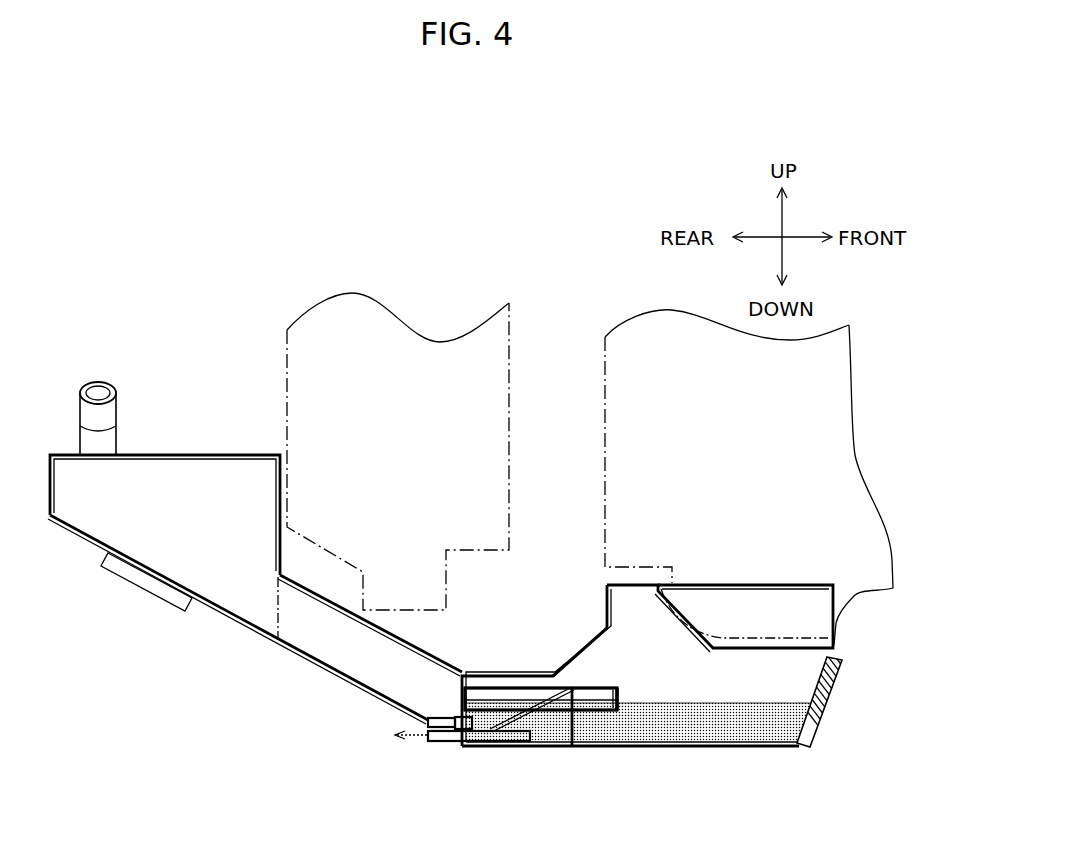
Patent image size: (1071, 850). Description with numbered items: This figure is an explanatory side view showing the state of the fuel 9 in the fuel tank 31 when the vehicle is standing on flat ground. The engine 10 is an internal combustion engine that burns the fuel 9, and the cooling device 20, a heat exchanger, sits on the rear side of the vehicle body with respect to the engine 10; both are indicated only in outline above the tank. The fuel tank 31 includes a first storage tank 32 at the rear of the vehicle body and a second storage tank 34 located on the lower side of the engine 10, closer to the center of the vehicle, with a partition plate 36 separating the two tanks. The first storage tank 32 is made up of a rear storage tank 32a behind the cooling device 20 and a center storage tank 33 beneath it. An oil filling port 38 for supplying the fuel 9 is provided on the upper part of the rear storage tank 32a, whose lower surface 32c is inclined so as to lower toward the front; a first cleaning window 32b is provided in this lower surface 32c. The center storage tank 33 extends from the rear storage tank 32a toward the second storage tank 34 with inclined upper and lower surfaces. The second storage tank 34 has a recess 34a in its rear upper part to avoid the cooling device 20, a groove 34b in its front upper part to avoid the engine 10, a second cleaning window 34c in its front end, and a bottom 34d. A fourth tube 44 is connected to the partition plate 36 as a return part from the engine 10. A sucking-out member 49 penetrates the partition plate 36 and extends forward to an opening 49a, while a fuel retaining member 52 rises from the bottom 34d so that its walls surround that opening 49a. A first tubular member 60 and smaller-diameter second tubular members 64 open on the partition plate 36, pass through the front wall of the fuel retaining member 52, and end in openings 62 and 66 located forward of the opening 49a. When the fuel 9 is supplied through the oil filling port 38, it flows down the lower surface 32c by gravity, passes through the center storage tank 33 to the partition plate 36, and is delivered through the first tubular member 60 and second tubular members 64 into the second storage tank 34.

The fuel 9 is at (417, 722).
The engine 10 is at (640, 347).
The cooling device 20 is at (308, 345).
The fuel tank 31 is at (257, 715).
The first storage tank 32 is at (103, 553).
The rear storage tank 32a is at (232, 607).
The first cleaning window 32b is at (150, 582).
The lower surface 32c is at (250, 628).
The center storage tank 33 is at (315, 647).
The second storage tank 34 is at (760, 748).
The recess 34a is at (575, 647).
The groove 34b is at (803, 605).
The second cleaning window 34c is at (822, 712).
The bottom 34d is at (698, 738).
The partition plate 36 is at (462, 747).
The oil filling port 38 is at (97, 390).
The fourth tube 44 is at (453, 717).
The sucking-out member 49 is at (472, 748).
The opening 49a is at (527, 748).
The fuel retaining member 52 is at (567, 748).
The first tubular member 60 is at (487, 683).
The opening 62 is at (623, 708).
The second tubular member 64 is at (487, 683).
The opening 66 is at (623, 708).